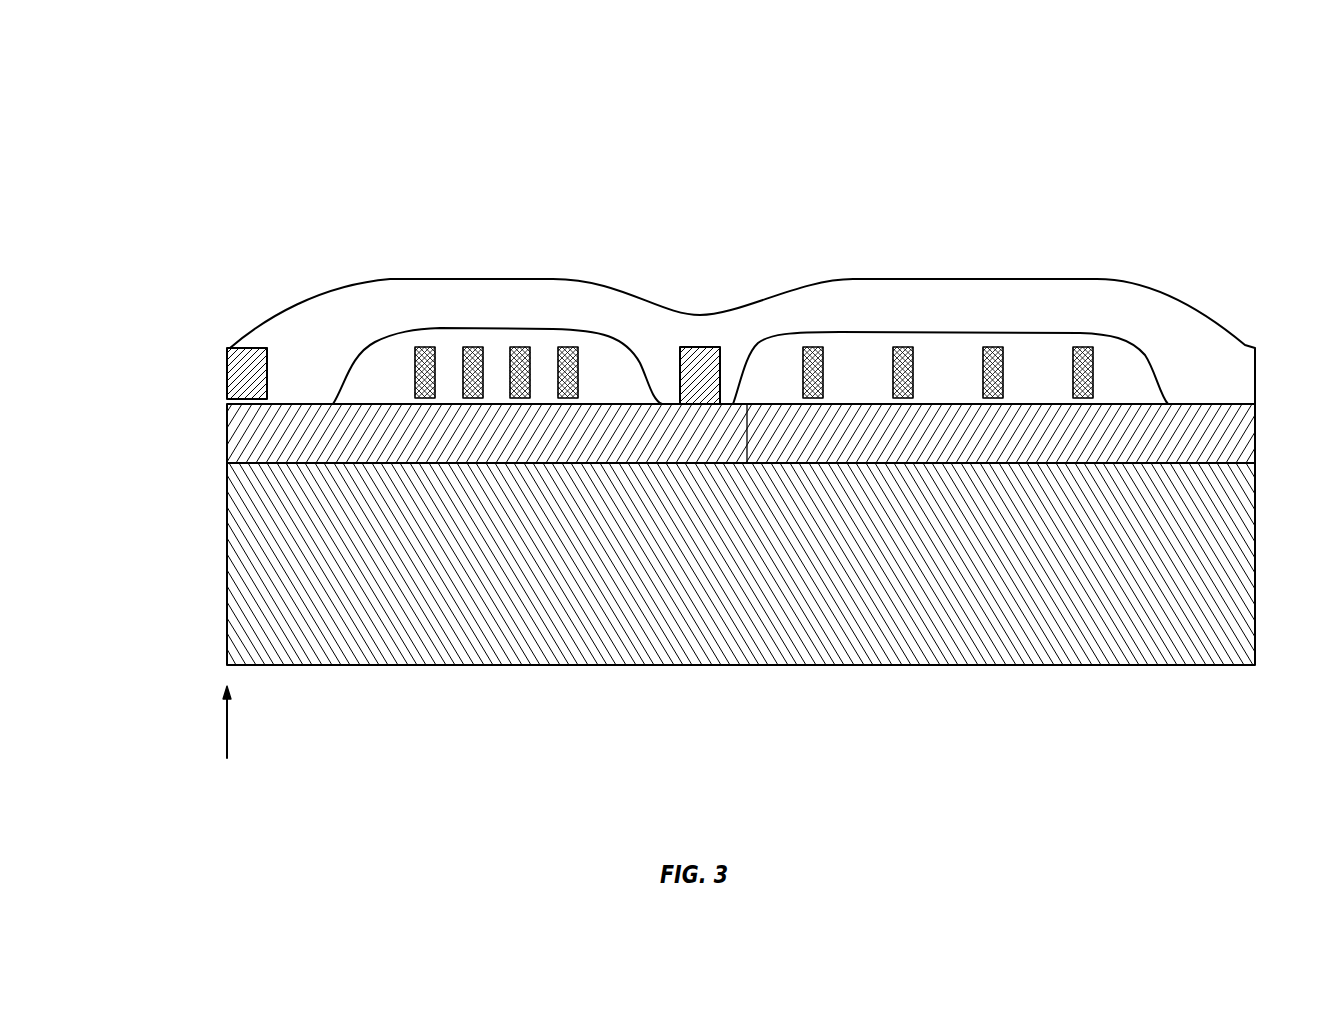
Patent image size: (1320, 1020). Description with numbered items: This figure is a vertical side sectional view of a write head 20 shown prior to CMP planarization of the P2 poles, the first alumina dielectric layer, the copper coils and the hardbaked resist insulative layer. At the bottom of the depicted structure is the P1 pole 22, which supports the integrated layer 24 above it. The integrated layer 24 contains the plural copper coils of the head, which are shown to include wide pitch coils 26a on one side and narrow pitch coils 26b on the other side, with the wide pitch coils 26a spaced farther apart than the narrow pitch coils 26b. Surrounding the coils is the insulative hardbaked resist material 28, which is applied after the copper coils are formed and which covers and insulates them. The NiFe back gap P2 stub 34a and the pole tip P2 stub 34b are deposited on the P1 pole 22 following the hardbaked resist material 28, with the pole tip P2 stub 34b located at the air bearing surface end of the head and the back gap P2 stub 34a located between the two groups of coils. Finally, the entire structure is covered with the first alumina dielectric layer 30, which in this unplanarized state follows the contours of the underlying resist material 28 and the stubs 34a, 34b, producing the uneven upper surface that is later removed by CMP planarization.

The magnetic write head 20 is at (264, 65).
The P1 pole 22 is at (232, 448).
The integrated layer 24 is at (446, 350).
The wide pitch coils 26a is at (898, 347).
The narrow pitch coils 26b is at (568, 347).
The insulative hardbaked resist material 28 is at (597, 365).
The first alumina dielectric layer 30 is at (306, 363).
The NiFe back gap P2 stub 34a is at (704, 352).
The NiFe pole tip P2 stub 34b is at (232, 378).